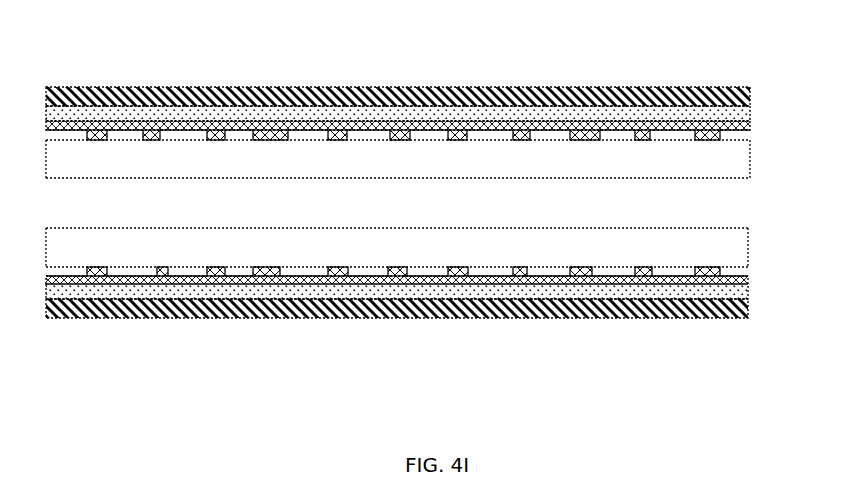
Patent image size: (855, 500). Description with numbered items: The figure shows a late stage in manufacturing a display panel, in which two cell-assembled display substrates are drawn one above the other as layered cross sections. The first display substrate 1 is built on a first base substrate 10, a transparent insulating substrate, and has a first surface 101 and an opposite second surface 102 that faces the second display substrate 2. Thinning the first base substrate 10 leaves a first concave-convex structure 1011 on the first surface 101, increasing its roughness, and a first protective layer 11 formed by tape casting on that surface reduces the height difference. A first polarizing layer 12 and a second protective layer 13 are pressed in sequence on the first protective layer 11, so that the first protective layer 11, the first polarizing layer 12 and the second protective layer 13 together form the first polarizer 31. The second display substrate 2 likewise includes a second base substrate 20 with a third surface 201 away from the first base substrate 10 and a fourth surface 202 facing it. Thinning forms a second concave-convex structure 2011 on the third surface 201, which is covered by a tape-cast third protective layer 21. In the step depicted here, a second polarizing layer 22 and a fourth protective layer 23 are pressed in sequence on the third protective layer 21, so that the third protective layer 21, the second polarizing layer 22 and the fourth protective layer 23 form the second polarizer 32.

The first display substrate 1 is at (411, 292).
The first base substrate 10 is at (417, 238).
The first surface 101 is at (577, 272).
The first concave-convex structure 1011 is at (670, 272).
The second surface 102 is at (493, 226).
The first protective layer 11 is at (523, 287).
The first polarizing layer 12 is at (447, 287).
The second protective layer 13 is at (570, 351).
The first polarizer 31 is at (397, 328).
The second display substrate 2 is at (412, 117).
The second base substrate 20 is at (128, 160).
The third surface 201 is at (270, 140).
The second concave-convex structure 2011 is at (318, 130).
The fourth surface 202 is at (357, 178).
The third protective layer 21 is at (397, 58).
The second polarizing layer 22 is at (447, 118).
The fourth protective layer 23 is at (367, 87).
The second polarizer 32 is at (398, 79).